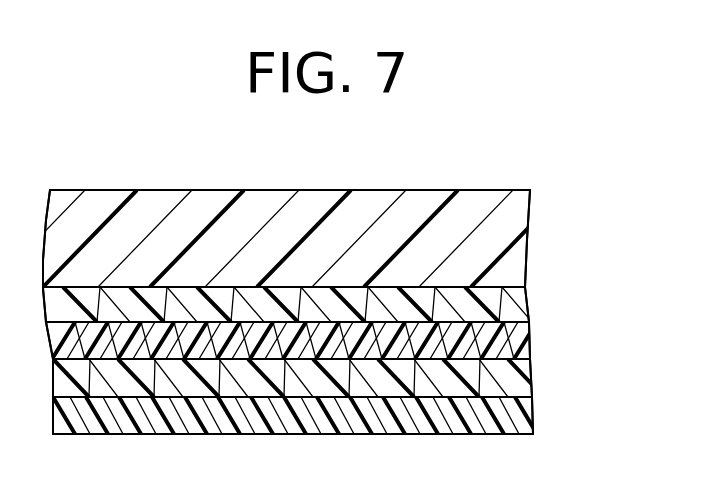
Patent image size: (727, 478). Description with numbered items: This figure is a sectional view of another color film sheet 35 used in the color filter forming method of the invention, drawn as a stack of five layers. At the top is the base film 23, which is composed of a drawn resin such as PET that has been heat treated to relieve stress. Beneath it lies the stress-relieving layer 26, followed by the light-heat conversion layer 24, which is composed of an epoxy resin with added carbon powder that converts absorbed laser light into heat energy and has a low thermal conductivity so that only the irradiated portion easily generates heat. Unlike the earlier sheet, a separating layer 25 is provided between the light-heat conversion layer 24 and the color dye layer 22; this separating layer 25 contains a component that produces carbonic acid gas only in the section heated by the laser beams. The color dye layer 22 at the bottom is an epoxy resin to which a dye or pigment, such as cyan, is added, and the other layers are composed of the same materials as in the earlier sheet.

The color film sheet 35 is at (628, 198).
The base film 23 is at (497, 225).
The stress-relieving layer 26 is at (490, 307).
The light-heat conversion layer 24 is at (507, 345).
The separating layer 25 is at (518, 382).
The color dye layer 22 is at (513, 407).